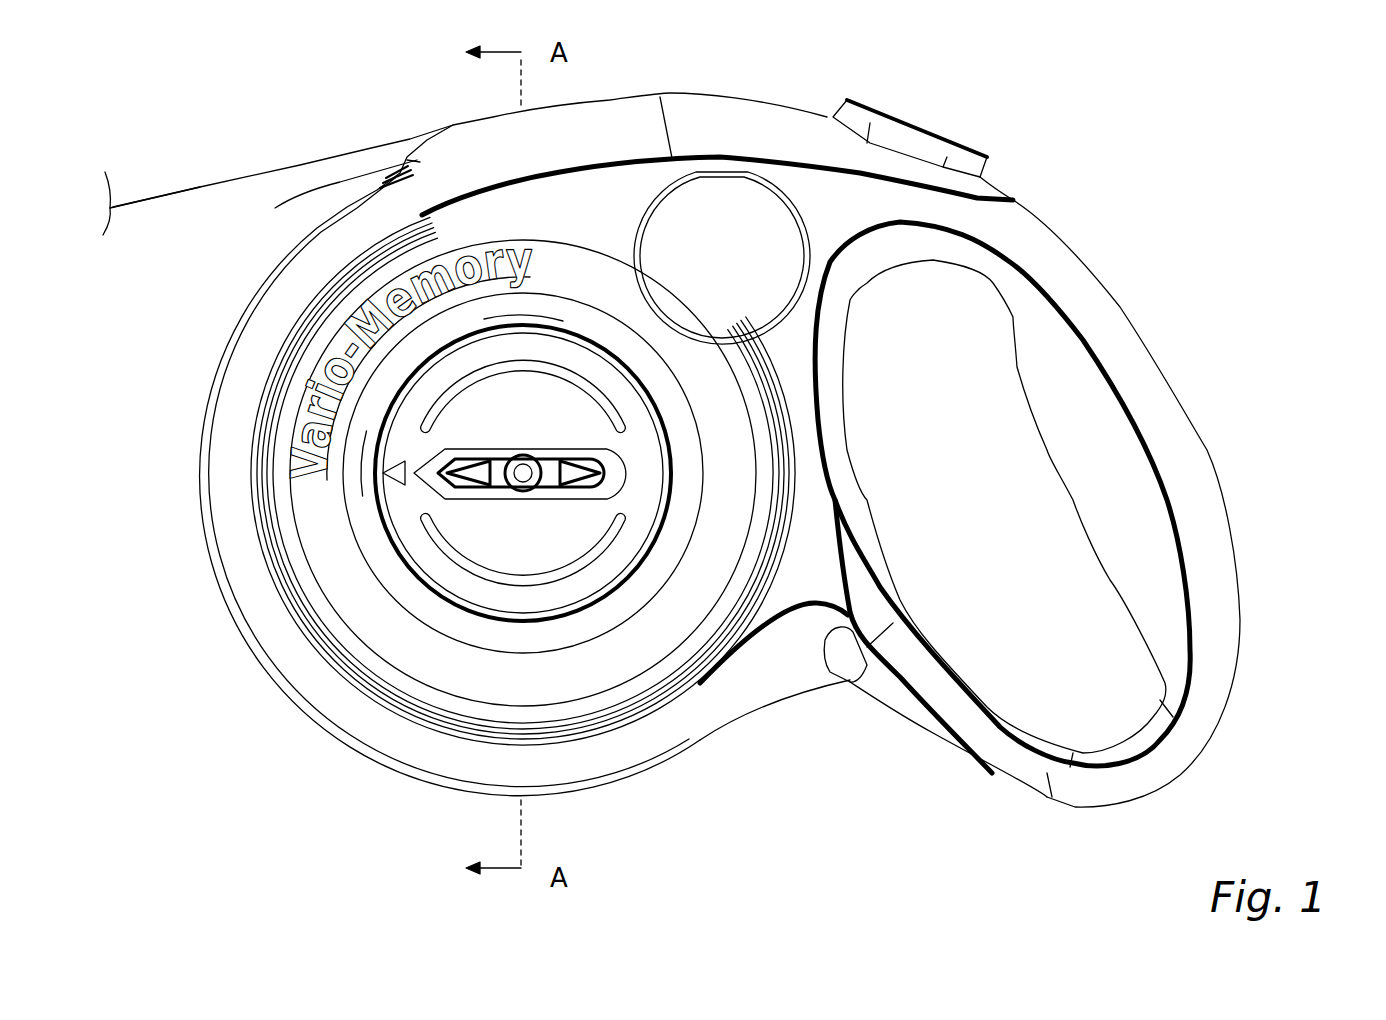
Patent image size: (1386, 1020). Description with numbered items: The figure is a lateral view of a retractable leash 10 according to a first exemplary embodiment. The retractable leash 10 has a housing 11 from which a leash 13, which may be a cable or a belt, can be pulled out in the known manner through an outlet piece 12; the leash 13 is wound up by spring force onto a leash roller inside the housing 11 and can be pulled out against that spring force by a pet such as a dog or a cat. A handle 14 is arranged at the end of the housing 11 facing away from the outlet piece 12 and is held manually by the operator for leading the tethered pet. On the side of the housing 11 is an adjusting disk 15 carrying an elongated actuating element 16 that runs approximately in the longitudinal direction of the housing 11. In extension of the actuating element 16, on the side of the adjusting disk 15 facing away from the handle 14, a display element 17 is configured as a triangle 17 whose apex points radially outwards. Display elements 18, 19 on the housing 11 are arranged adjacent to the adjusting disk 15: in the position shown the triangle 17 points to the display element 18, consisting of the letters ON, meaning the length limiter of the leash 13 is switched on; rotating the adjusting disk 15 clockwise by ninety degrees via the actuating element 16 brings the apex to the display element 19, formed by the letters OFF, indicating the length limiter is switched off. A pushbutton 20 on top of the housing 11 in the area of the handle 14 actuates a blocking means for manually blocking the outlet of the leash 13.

The retractable leash 10 is at (1182, 111).
The housing 11 is at (770, 690).
The outlet piece 12 is at (317, 206).
The leash 13 is at (185, 192).
The handle 14 is at (1228, 460).
The adjusting disk 15 is at (613, 393).
The actuating element 16 is at (500, 493).
The display element 17 is at (400, 467).
The display element 18 is at (327, 495).
The display element 19 is at (557, 300).
The pushbutton 20 is at (913, 118).